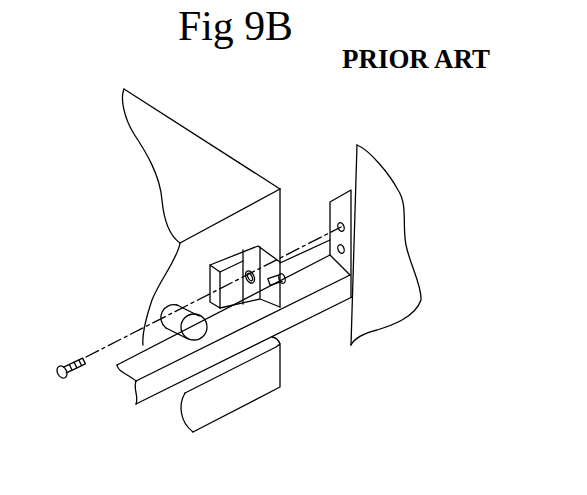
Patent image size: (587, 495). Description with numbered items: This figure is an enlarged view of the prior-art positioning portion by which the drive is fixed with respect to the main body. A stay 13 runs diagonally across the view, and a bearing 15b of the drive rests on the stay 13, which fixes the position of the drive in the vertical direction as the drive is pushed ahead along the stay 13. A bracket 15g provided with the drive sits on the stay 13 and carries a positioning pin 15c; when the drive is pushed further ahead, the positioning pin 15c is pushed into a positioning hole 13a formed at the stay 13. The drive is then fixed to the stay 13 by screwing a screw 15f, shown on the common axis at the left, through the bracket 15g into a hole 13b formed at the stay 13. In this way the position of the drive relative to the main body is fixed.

The stay 13 is at (162, 391).
The positioning hole 13a is at (348, 252).
The hole 13b is at (338, 225).
The bearing 15b is at (163, 309).
The positioning pin 15c is at (284, 281).
The screw 15f is at (63, 379).
The bracket 15g is at (246, 247).